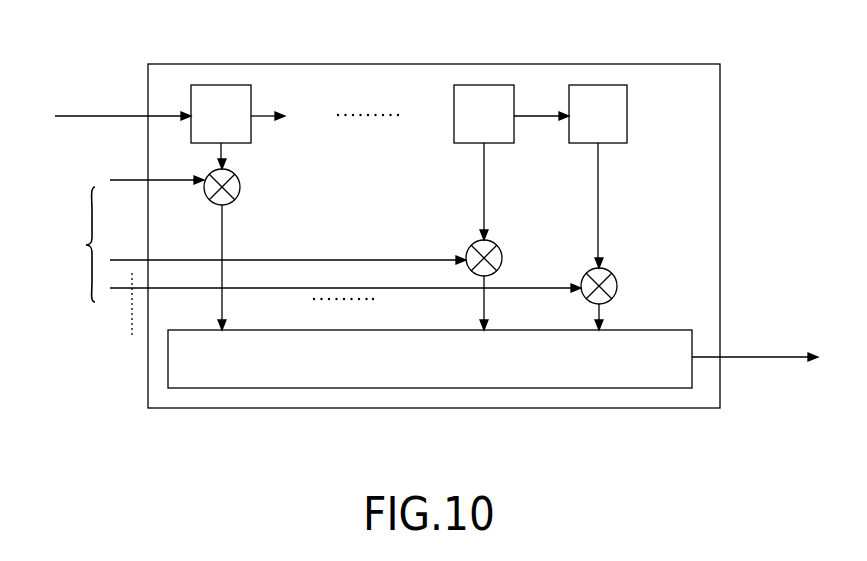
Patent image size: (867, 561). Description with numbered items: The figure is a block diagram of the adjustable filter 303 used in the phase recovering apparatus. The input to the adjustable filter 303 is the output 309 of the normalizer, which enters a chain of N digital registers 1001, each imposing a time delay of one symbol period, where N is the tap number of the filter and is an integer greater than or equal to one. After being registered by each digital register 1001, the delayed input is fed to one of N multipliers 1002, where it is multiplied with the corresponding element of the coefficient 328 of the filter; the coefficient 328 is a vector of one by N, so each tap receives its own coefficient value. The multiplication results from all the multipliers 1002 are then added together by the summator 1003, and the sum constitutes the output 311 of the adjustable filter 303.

The adjustable filter 303 is at (233, 64).
The output of the normalizer 309 is at (100, 115).
The digital register 1001 is at (251, 100).
The multiplier 1002 is at (245, 185).
The coefficient of the filter 328 is at (85, 207).
The summator 1003 is at (637, 329).
The output 311 is at (758, 356).